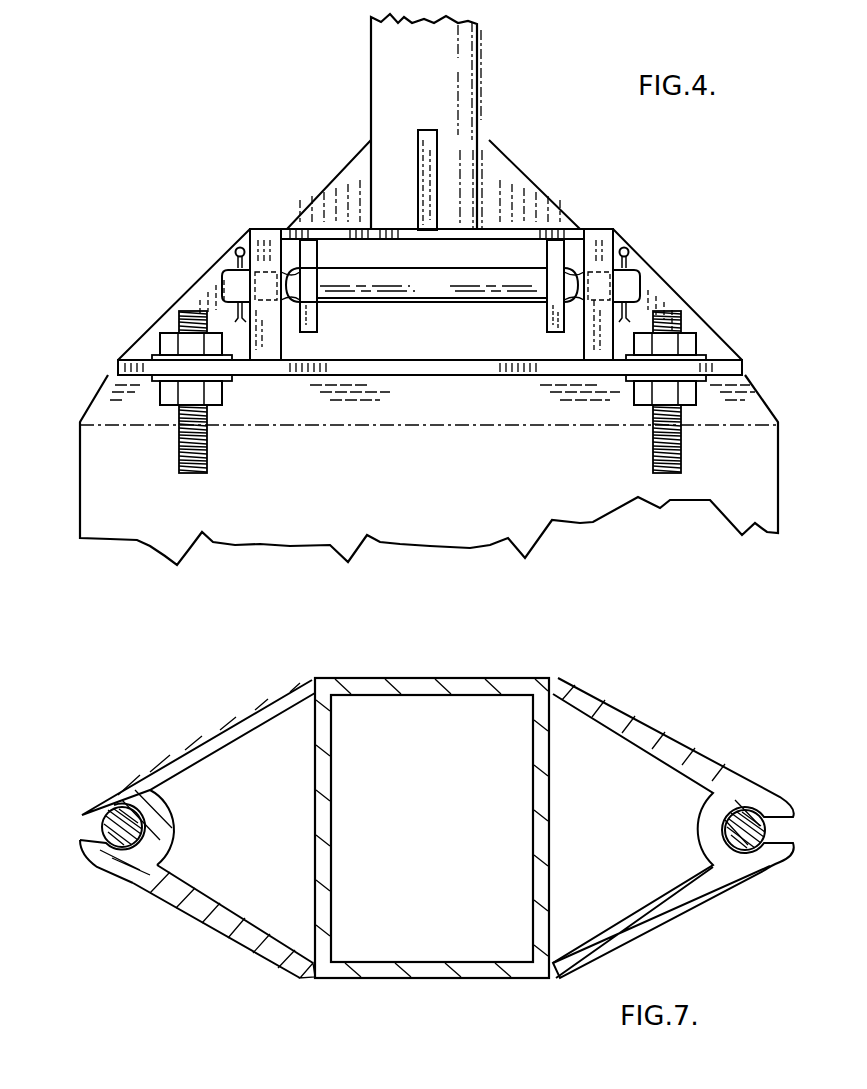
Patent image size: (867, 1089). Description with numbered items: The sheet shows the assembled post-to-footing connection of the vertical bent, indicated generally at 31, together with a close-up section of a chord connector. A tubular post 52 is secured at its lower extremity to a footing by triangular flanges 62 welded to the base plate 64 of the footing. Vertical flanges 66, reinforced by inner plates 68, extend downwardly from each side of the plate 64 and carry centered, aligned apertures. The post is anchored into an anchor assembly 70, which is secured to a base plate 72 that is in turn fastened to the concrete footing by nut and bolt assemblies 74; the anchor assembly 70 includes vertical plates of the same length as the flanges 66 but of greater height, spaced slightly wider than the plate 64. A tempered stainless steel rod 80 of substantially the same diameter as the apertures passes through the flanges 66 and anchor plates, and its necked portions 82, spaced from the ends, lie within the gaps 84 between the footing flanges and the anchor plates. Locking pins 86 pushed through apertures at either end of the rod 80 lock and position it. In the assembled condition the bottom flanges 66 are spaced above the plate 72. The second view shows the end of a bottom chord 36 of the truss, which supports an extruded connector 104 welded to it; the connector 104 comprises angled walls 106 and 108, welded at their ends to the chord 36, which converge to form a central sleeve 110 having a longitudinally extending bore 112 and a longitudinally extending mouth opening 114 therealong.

In FIG. 4, the base mounting assembly 31 is at (241, 160).
In FIG. 4, the tubular post 52 is at (468, 58).
In FIG. 4, the triangular flange 62 is at (432, 175).
In FIG. 4, the base plate 64 is at (452, 234).
In FIG. 4, the vertical flange 66 is at (578, 337).
In FIG. 4, the inner plate 68 is at (546, 318).
In FIG. 4, the anchor assembly 70 is at (188, 287).
In FIG. 4, the base plate 72 is at (448, 373).
In FIG. 4, the nut and bolt assembly 74 is at (222, 390).
In FIG. 4, the rod 80 is at (512, 275).
In FIG. 4, the necked portion 82 is at (280, 306).
In FIG. 4, the gap 84 is at (285, 218).
In FIG. 4, the locking pin 86 is at (240, 248).
In FIG. 7, the bottom chord 36 is at (490, 978).
In FIG. 7, the extruded connector 104 is at (267, 978).
In FIG. 7, the angled wall 106 is at (215, 728).
In FIG. 7, the angled wall 108 is at (186, 913).
In FIG. 7, the central sleeve 110 is at (139, 905).
In FIG. 7, the bore 112 is at (88, 834).
In FIG. 7, the mouth opening 114 is at (85, 863).